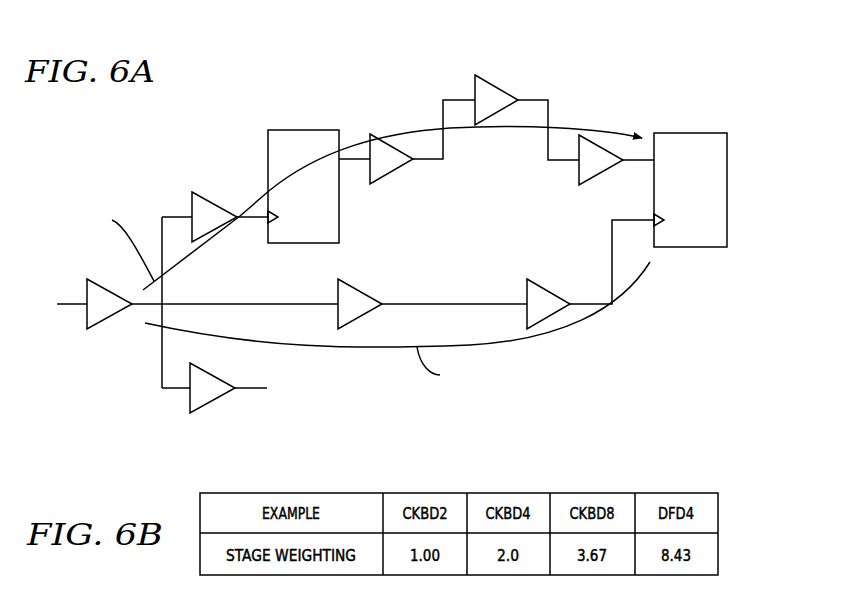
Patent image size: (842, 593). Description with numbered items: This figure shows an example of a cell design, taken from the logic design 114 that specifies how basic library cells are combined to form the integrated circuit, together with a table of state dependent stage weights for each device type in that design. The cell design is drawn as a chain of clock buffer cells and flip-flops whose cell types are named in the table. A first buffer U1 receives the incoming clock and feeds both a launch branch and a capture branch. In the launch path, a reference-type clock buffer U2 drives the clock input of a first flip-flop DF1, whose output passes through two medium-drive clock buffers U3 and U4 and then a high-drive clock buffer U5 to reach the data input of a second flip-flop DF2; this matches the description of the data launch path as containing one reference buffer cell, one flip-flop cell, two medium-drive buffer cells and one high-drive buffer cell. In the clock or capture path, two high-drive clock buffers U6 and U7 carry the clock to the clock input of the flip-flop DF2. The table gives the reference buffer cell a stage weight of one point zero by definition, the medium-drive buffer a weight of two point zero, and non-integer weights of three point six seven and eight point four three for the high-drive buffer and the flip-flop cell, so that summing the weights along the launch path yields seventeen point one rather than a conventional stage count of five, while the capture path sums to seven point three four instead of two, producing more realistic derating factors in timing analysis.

The logic design 114 is at (142, 134).
The clock buffer U1 is at (94, 304).
The CKBD2 clock buffer U2 is at (215, 201).
The CKBD4 clock buffer U3 is at (407, 142).
The CKBD4 clock buffer U4 is at (523, 101).
The CKBD8 clock buffer U5 is at (612, 144).
The CKBD8 clock buffer U6 is at (428, 293).
The CKBD8 clock buffer U7 is at (586, 274).
The DFD4 flip-flop DF1 (launch) DF1 is at (303, 186).
The DFD4 flip-flop DF2 (capture) DF2 is at (690, 190).